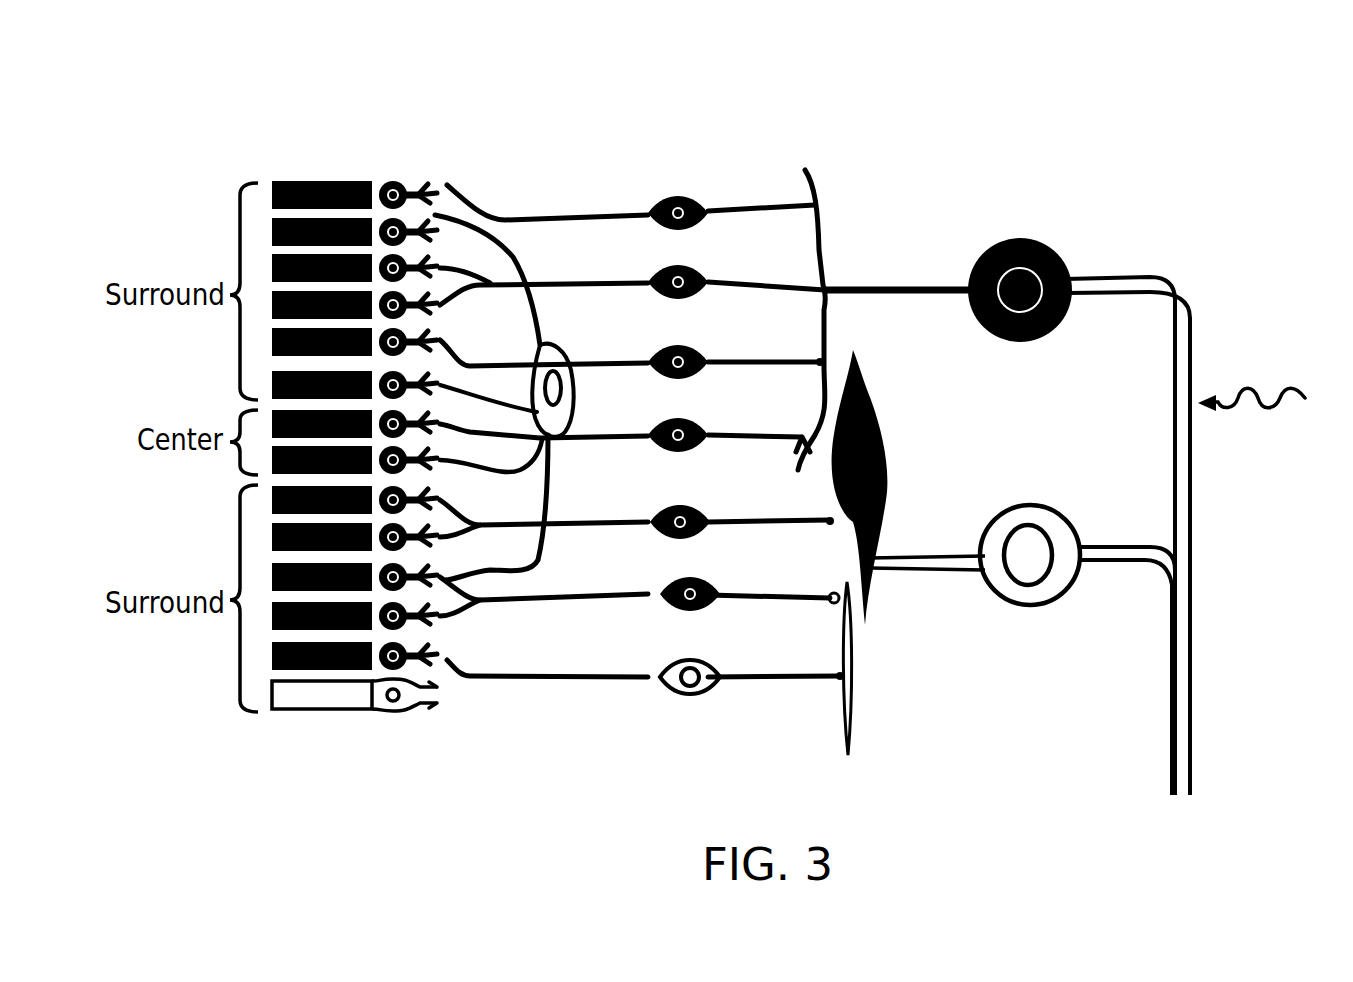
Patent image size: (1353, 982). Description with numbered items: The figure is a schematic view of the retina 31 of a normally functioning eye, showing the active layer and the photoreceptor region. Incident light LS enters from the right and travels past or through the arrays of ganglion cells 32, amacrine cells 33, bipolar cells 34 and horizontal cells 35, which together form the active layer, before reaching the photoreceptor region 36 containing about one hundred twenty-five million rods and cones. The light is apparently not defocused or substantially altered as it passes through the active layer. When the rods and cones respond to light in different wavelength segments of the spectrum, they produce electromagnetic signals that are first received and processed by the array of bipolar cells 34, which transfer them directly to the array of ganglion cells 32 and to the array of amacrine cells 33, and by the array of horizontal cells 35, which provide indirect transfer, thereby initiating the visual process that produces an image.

The retina 31 is at (1158, 104).
The ganglion cells 32 is at (942, 760).
The amacrine cells 33 is at (812, 760).
The bipolar cells 34 is at (627, 752).
The horizontal cells 35 is at (572, 750).
The photoreceptor region 36 is at (438, 155).
The incident light LS is at (1270, 395).